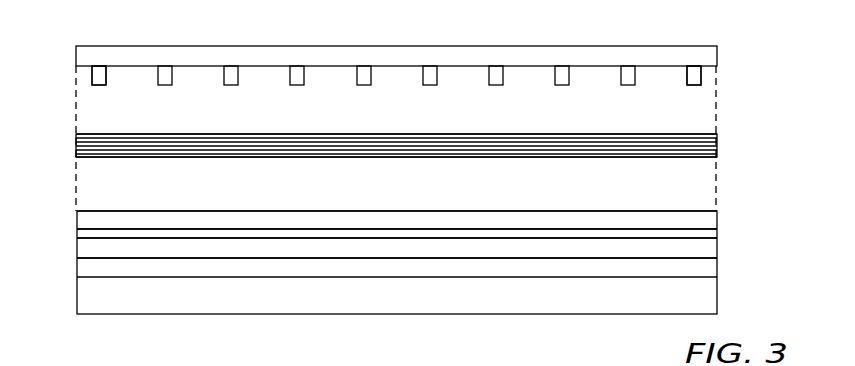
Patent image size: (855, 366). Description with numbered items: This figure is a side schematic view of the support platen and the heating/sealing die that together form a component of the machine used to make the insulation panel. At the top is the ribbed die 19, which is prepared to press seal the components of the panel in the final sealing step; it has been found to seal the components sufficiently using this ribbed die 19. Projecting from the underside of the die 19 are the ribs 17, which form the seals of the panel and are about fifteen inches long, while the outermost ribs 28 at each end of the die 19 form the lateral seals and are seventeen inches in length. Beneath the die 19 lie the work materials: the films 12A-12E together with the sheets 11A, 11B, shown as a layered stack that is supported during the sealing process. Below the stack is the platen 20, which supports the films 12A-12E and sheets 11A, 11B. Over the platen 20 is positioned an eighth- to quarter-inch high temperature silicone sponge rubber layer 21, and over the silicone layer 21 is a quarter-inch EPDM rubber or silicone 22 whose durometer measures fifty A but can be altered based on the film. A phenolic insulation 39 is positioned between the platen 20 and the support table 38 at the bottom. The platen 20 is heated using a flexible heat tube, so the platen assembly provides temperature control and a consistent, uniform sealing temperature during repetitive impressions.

The die 19 is at (123, 46).
The ribs 17 is at (496, 86).
The outermost ribs 28 is at (98, 86).
The sheet 11A is at (240, 134).
The sheet 11B is at (238, 158).
The films 12A-12E is at (719, 154).
The EPDM rubber or silicone layer 22 is at (88, 220).
The high temperature silicone sponge rubber layer 21 is at (705, 235).
The platen 20 is at (88, 250).
The phenolic insulation 39 is at (705, 268).
The support table 38 is at (88, 296).